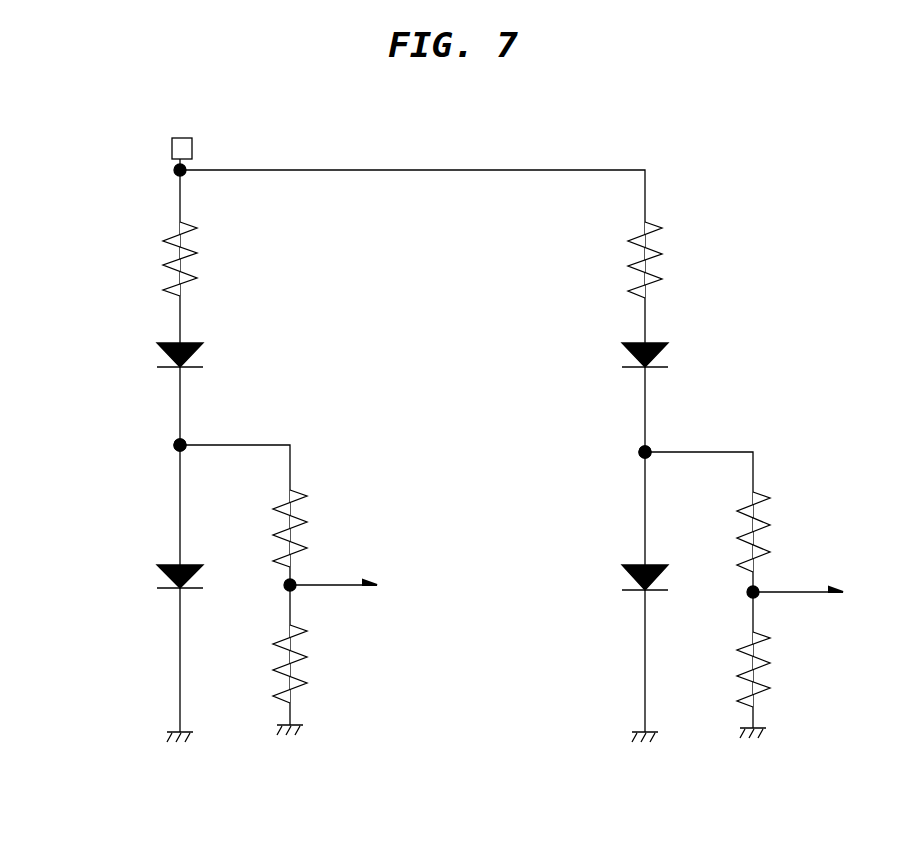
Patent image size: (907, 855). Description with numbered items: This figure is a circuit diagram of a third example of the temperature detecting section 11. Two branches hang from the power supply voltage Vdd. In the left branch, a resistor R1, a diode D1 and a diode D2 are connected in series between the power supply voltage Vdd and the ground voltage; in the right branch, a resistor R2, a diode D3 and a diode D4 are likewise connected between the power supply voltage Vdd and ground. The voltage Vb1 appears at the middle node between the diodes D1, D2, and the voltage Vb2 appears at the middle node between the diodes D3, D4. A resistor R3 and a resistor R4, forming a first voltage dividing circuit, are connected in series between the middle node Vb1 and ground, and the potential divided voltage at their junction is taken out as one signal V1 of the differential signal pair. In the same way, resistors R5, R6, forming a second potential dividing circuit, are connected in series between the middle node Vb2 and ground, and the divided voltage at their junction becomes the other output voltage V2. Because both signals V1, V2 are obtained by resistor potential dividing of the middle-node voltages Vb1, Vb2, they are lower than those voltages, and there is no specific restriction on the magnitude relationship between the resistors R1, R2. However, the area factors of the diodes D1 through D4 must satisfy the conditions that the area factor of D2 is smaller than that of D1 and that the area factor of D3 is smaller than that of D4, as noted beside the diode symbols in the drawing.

The temperature detecting section 11 is at (350, 846).
The resistor (first impedance element) R1 is at (154, 259).
The resistor (second impedance element) R2 is at (622, 260).
The resistor (first voltage dividing circuit) R3 is at (315, 528).
The resistor (first voltage dividing circuit) R4 is at (312, 664).
The resistor (second potential dividing circuit) R5 is at (777, 532).
The resistor (second potential dividing circuit) R6 is at (778, 669).
The diode (second rectifying element) D1 is at (146, 366).
The diode (first rectifying element) D2 is at (125, 580).
The diode (fourth rectifying element) D3 is at (617, 366).
The diode (third rectifying element) D4 is at (590, 589).
The power supply voltage (second reference voltage) Vdd is at (184, 129).
The voltage at the middle node of diodes D1, D2 Vb1 is at (154, 448).
The voltage at the middle node of diodes D3, D4 Vb2 is at (617, 455).
The one signal of the differential signal pair V1 is at (352, 586).
The other signal of the differential signal pair (output voltage) V2 is at (817, 595).